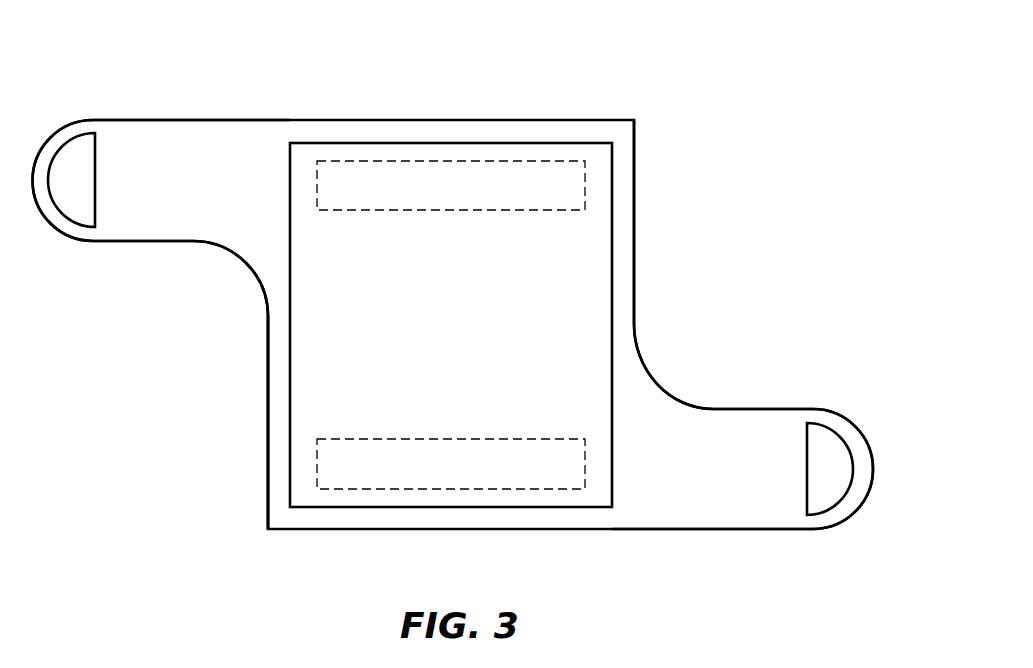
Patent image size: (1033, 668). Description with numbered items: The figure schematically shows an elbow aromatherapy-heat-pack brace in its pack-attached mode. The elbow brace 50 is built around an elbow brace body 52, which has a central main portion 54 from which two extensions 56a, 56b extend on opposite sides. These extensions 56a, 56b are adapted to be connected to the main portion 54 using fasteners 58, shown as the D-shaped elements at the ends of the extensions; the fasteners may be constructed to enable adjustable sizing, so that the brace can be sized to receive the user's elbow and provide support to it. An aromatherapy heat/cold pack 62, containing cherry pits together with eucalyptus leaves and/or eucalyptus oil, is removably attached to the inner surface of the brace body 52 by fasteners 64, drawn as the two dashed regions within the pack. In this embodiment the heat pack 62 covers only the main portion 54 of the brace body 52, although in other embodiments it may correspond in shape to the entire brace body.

The elbow brace 50 is at (603, 80).
The elbow brace body 52 is at (620, 172).
The main portion 54 is at (280, 373).
The extension 56a is at (150, 135).
The extension 56b is at (688, 503).
The fasteners 58 is at (77, 207).
The aromatherapy heat/cold pack 62 is at (397, 497).
The fasteners 64 is at (407, 178).